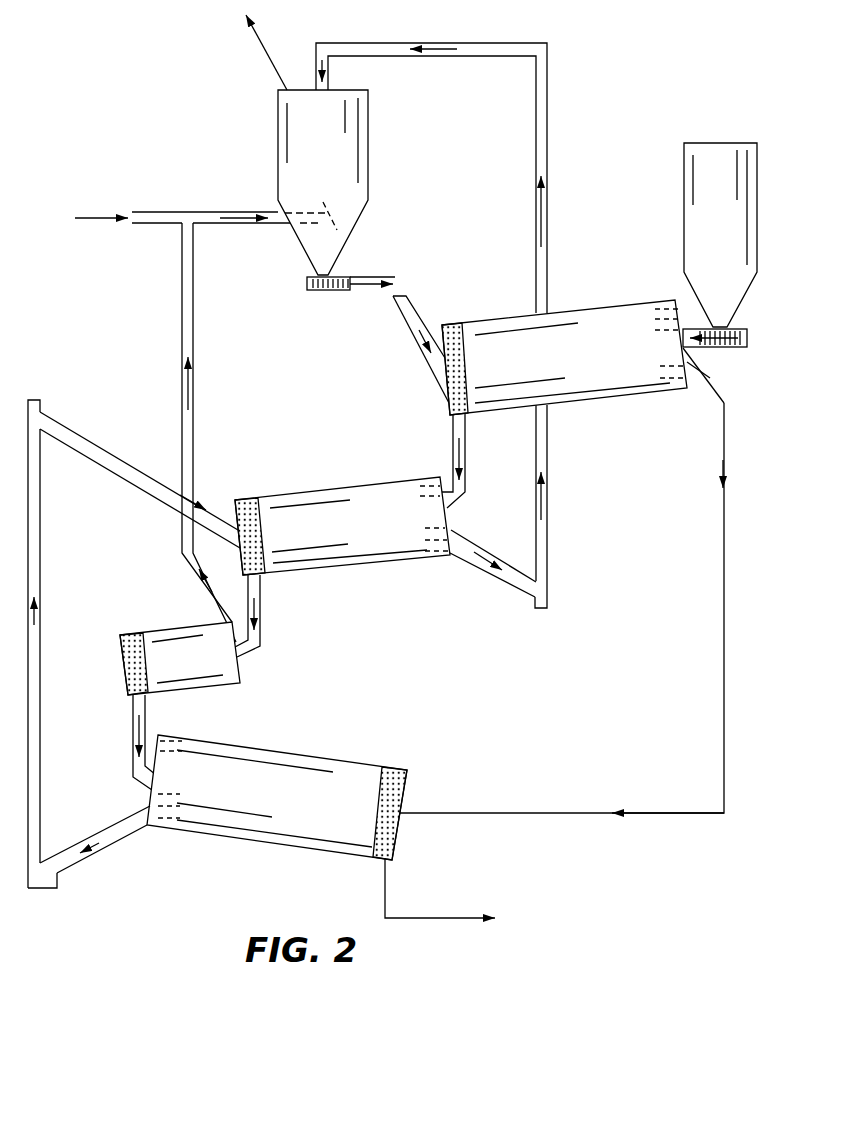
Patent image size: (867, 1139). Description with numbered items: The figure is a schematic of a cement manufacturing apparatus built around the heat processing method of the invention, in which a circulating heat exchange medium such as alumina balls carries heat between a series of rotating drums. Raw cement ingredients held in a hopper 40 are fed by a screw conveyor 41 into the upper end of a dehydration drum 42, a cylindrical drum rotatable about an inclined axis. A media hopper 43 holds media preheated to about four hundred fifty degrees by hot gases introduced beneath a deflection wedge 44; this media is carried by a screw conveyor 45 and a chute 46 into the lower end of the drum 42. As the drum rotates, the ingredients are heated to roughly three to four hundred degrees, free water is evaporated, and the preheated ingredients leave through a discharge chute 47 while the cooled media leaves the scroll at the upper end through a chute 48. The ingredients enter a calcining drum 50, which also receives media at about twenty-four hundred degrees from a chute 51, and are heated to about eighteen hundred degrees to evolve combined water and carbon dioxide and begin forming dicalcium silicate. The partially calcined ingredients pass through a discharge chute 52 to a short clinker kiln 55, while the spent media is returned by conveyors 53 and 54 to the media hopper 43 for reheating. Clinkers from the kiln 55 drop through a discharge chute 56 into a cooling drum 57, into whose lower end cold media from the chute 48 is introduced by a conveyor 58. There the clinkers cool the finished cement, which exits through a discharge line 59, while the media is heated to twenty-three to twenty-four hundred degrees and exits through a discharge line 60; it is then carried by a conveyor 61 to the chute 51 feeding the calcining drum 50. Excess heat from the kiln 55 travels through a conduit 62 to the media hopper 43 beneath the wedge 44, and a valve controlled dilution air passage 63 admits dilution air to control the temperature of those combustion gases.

The hopper 40 is at (708, 236).
The screw conveyor 41 is at (730, 348).
The dehydration drum 42 is at (573, 364).
The media hopper 43 is at (331, 157).
The deflection wedge 44 is at (326, 201).
The screw conveyor 45 is at (350, 273).
The chute 46 is at (415, 307).
The discharge chute 47 is at (453, 432).
The chute 48 is at (697, 382).
The calcining drum 50 is at (350, 530).
The chute 51 is at (103, 452).
The discharge chute 52 is at (260, 605).
The conveyor 53 is at (490, 550).
The conveyor 54 is at (548, 520).
The clinker kiln 55 is at (166, 671).
The discharge chute 56 is at (133, 715).
The cooling drum 57 is at (278, 809).
The conveyor 58 is at (723, 553).
The discharge line 59 is at (415, 918).
The discharge line 60 is at (103, 833).
The conveyor 61 is at (40, 495).
The conduit 62 is at (195, 313).
The dilution air passage 63 is at (166, 211).